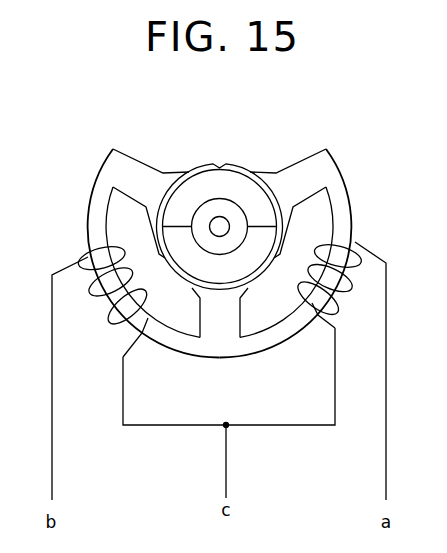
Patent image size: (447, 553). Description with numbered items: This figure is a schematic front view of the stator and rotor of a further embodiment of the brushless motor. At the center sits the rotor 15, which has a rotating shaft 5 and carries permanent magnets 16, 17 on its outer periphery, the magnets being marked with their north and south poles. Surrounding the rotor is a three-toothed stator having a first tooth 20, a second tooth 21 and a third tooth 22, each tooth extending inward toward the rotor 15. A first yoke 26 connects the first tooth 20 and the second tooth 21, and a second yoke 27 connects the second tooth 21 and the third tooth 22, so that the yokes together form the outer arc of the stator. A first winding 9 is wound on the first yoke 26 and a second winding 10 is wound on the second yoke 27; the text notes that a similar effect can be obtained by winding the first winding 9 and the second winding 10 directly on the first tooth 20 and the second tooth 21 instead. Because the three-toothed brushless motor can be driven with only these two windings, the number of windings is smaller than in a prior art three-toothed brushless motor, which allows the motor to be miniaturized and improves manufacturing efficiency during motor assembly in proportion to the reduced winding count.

The rotating shaft 5 is at (223, 224).
The first winding 9 is at (337, 300).
The second winding 10 is at (108, 320).
The rotor 15 is at (230, 183).
The permanent magnet 16 is at (200, 185).
The permanent magnet 17 is at (245, 262).
The first tooth 20 is at (315, 172).
The second tooth 21 is at (222, 325).
The third tooth 22 is at (137, 175).
The first yoke 26 is at (346, 218).
The second yoke 27 is at (93, 217).